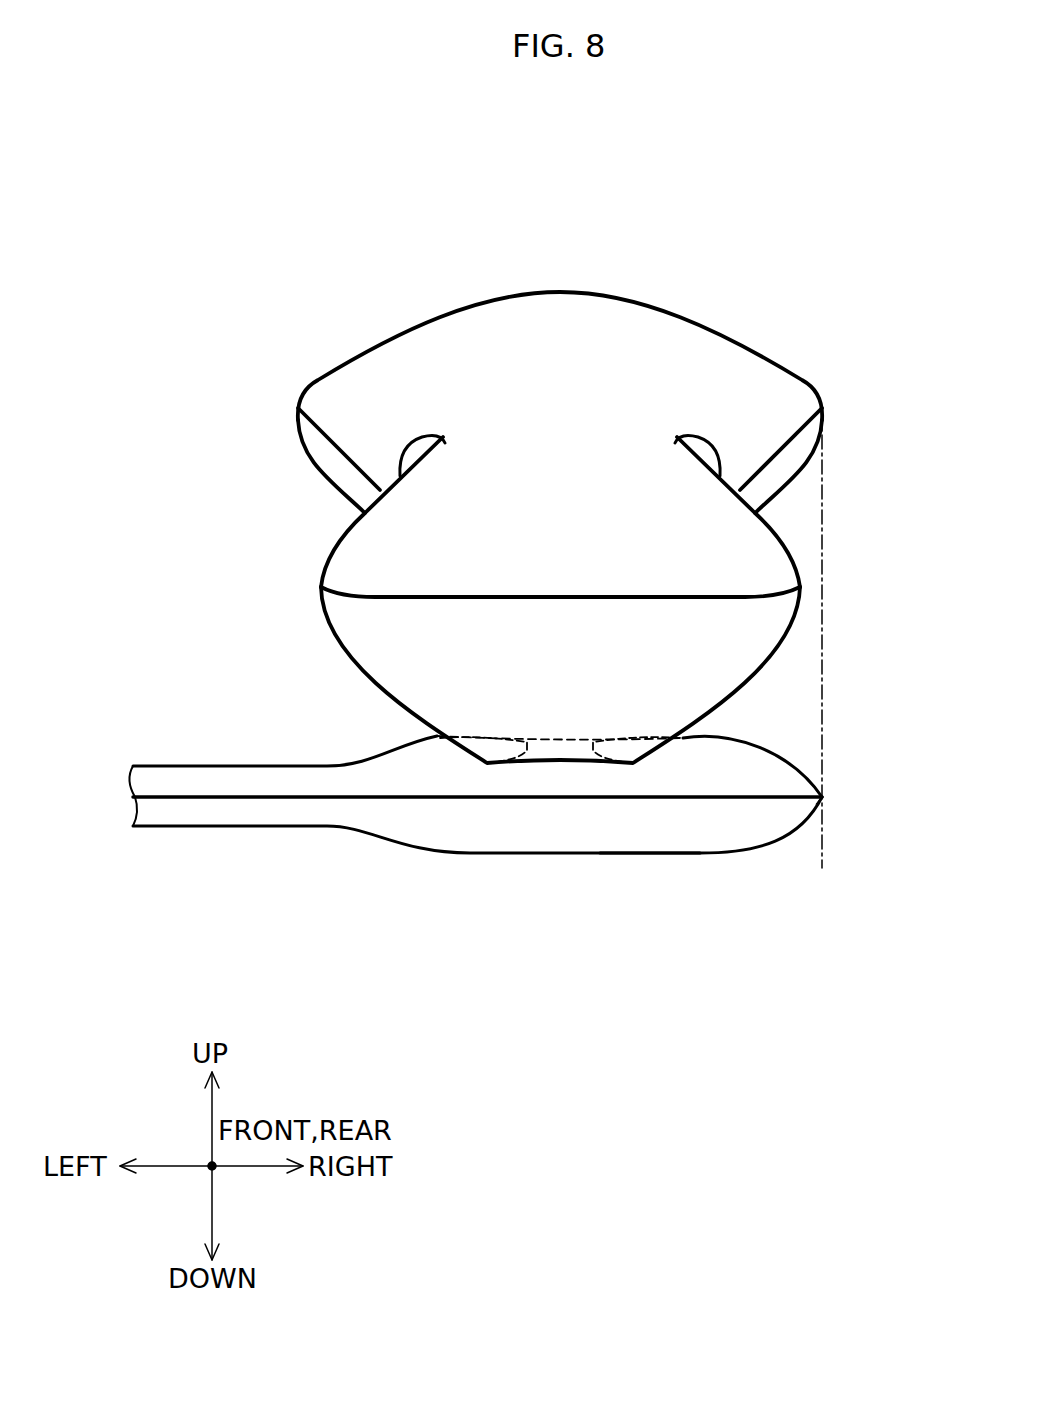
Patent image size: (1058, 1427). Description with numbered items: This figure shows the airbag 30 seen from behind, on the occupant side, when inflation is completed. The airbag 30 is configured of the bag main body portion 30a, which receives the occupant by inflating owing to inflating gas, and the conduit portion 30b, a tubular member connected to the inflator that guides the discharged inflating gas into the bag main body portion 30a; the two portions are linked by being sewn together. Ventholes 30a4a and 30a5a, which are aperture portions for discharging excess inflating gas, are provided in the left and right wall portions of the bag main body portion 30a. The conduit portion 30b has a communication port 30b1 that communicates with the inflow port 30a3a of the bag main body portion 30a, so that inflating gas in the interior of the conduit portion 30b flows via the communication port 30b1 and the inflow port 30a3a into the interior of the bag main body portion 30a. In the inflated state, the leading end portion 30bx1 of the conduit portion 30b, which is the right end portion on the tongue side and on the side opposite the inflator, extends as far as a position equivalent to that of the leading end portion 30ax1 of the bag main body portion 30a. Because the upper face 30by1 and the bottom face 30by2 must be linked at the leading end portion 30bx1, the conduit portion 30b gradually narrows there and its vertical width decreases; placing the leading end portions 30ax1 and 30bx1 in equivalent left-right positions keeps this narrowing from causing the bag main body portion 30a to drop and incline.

The airbag 30 is at (255, 288).
The bag main body portion 30a is at (613, 317).
The venthole 30a4a is at (407, 450).
The venthole 30a5a is at (713, 450).
The leading end portion of the bag main body portion 30ax1 is at (822, 410).
The conduit portion 30b is at (313, 813).
The upper face 30by1 is at (683, 737).
The leading end portion of the conduit portion 30bx1 is at (822, 797).
The bottom face 30by2 is at (663, 853).
The inflow port 30a3a is at (487, 752).
The communication port 30b1 is at (633, 752).